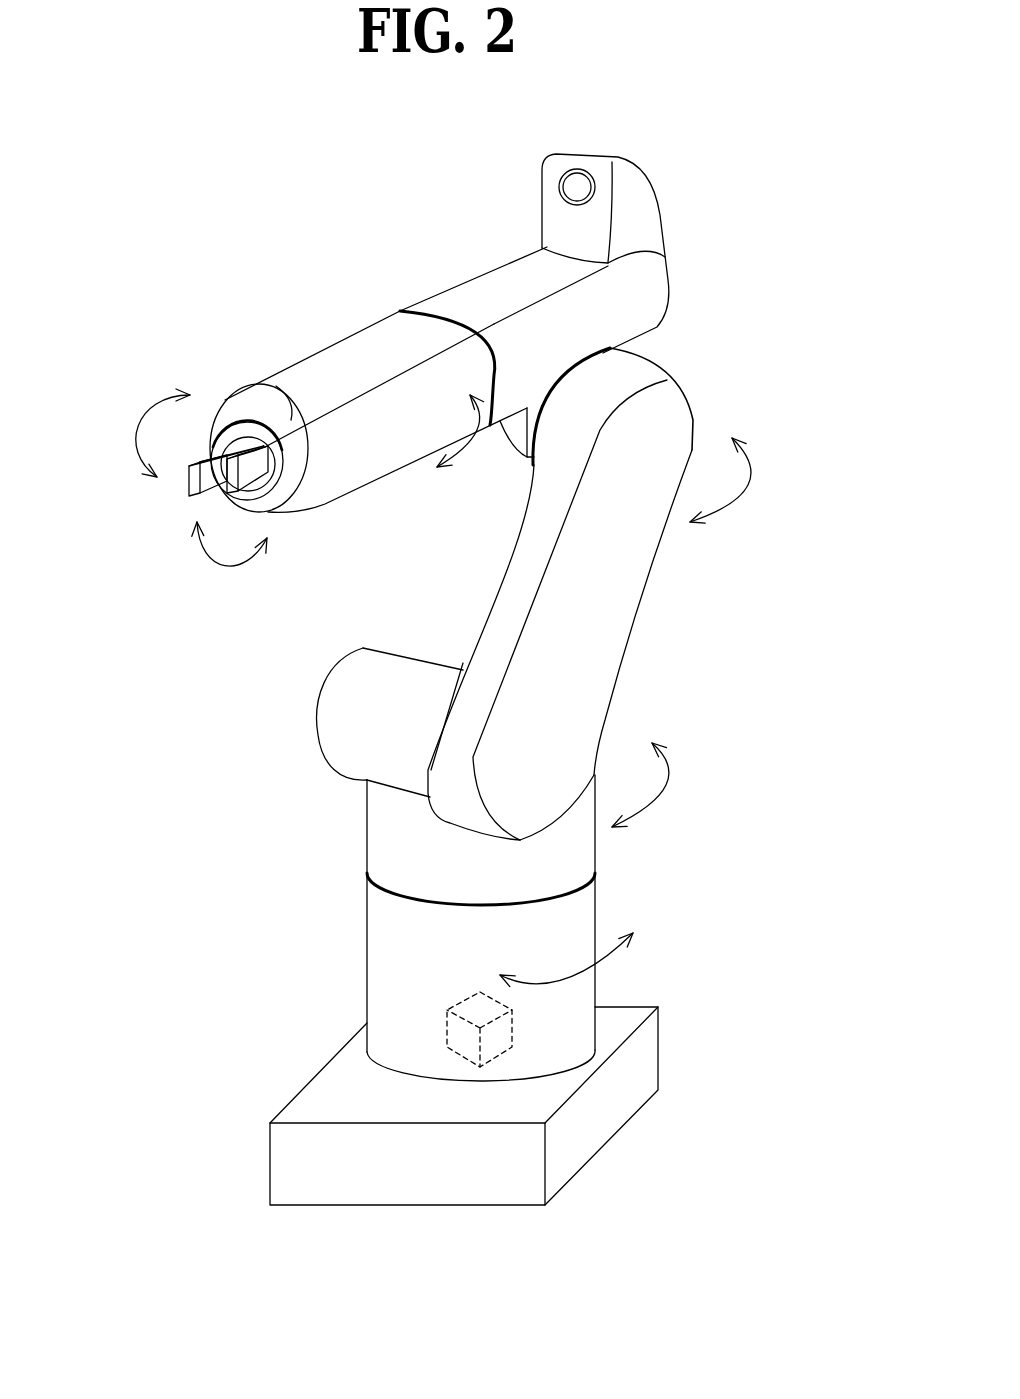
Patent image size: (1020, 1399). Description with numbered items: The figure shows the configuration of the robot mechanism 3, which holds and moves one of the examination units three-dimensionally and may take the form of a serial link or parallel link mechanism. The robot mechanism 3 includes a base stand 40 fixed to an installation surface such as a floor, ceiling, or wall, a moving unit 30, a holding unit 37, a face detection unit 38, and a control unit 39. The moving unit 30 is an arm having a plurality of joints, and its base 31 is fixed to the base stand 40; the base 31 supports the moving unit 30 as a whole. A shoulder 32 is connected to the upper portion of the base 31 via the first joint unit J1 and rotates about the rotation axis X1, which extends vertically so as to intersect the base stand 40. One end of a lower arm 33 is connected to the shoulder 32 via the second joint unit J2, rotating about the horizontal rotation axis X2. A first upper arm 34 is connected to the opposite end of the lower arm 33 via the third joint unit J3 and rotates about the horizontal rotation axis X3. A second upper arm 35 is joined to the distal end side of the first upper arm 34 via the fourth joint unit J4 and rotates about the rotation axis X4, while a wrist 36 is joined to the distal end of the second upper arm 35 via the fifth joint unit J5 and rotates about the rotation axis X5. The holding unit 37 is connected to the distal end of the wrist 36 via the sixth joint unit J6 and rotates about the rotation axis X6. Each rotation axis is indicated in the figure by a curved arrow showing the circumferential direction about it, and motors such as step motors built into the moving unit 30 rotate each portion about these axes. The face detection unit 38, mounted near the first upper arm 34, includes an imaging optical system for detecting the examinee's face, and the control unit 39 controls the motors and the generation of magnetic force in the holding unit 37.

The robot mechanism 3 is at (166, 159).
The moving unit 30 is at (220, 735).
The base 31 is at (393, 967).
The shoulder 32 is at (400, 823).
The lower arm 33 is at (598, 605).
The first upper arm 34 is at (633, 300).
The second upper arm 35 is at (372, 458).
The wrist 36 is at (288, 418).
The holding unit 37 is at (185, 496).
The face detection unit 38 is at (591, 134).
The control unit 39 is at (526, 1047).
The base stand 40 is at (590, 1186).
The first joint unit J1 is at (370, 882).
The second joint unit J2 is at (447, 712).
The third joint unit J3 is at (603, 343).
The fourth joint unit J4 is at (447, 312).
The fifth joint unit J5 is at (212, 444).
The sixth joint unit J6 is at (252, 413).
The rotation axis X1 is at (573, 966).
The rotation axis X2 is at (658, 793).
The rotation axis X3 is at (738, 483).
The rotation axis X4 is at (470, 436).
The rotation axis X5 is at (146, 436).
The rotation axis X6 is at (232, 565).